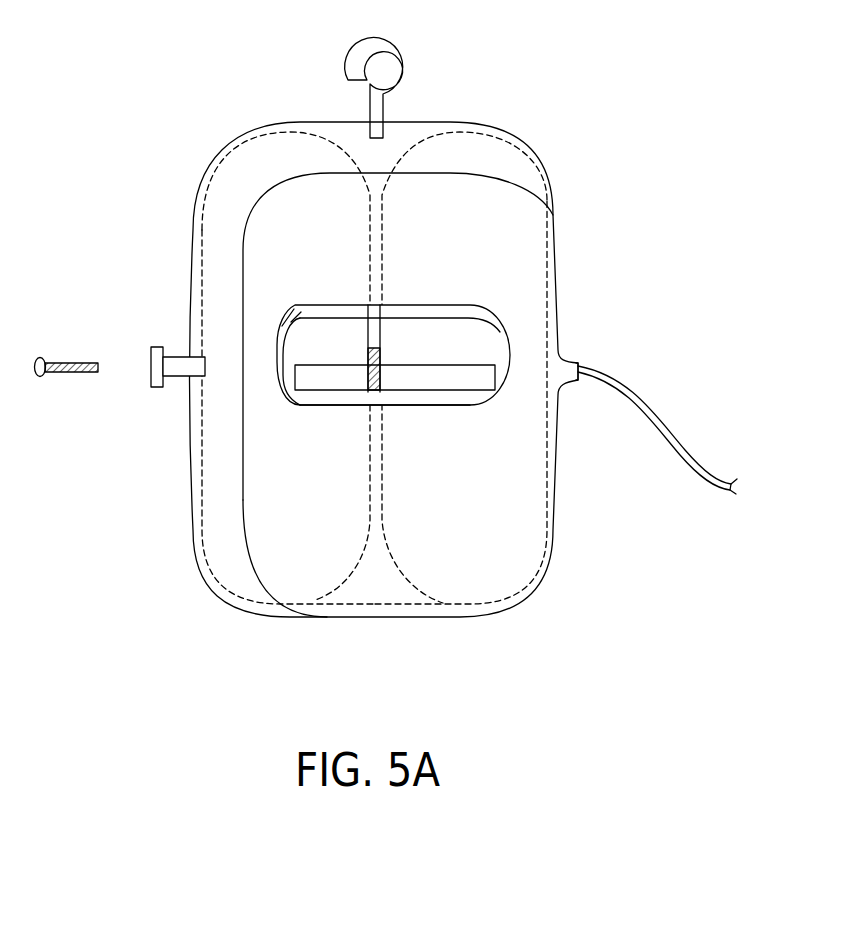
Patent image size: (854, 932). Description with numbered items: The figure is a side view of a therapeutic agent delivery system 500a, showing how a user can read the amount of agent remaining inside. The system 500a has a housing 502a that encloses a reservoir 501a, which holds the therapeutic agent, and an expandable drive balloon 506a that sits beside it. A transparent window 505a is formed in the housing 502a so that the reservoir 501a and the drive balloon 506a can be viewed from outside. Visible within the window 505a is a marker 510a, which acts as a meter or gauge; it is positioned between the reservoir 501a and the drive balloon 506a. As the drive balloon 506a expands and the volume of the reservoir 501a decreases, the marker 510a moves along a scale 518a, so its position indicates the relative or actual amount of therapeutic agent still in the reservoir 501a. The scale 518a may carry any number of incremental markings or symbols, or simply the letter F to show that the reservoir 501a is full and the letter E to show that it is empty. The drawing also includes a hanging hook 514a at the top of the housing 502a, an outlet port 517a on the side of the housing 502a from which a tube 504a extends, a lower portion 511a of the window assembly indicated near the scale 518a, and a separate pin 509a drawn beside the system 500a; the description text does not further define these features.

The system 500a is at (171, 49).
The reservoir 501a is at (458, 538).
The housing 502a is at (522, 148).
The outlet tube 504a is at (642, 397).
The transparent window 505a is at (489, 338).
The expandable drive balloon 506a is at (290, 538).
The pin 509a is at (62, 375).
The marker 510a is at (367, 355).
The housing lower portion 511a is at (418, 388).
The hanger hook 514a is at (406, 62).
The outlet port 517a is at (580, 362).
The scale 518a is at (500, 381).